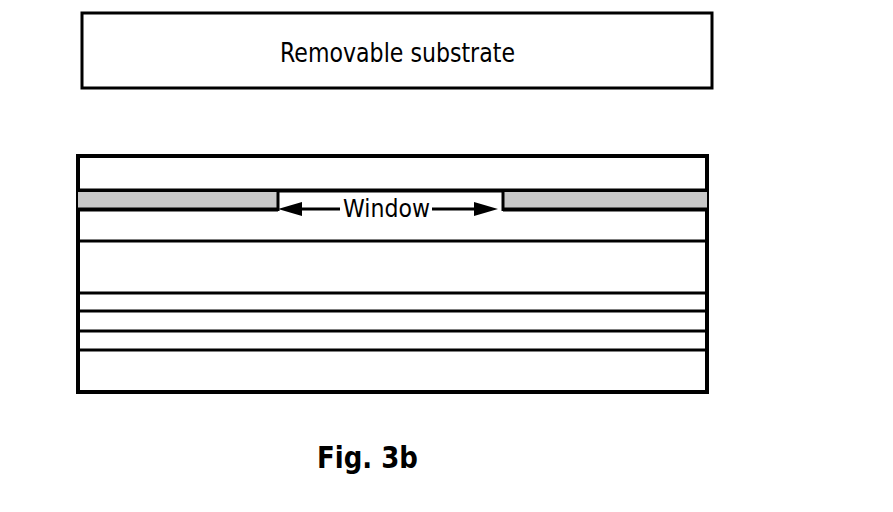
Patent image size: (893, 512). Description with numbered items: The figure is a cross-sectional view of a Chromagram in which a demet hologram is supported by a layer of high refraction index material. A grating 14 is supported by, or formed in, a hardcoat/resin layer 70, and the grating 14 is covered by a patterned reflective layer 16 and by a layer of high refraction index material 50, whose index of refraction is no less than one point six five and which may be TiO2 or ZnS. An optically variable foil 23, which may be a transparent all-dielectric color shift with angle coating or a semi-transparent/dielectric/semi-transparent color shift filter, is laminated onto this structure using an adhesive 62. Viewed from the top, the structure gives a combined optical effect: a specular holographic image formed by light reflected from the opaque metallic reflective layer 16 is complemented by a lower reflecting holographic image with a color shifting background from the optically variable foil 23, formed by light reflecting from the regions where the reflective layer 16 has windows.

The grating 14 is at (184, 176).
The patterned reflective layer 16 is at (90, 200).
The hardcoat/resin layer 70 is at (690, 173).
The layer of high refraction index material 50 is at (700, 227).
The adhesive 62 is at (690, 266).
The optically variable foil 23 is at (713, 292).